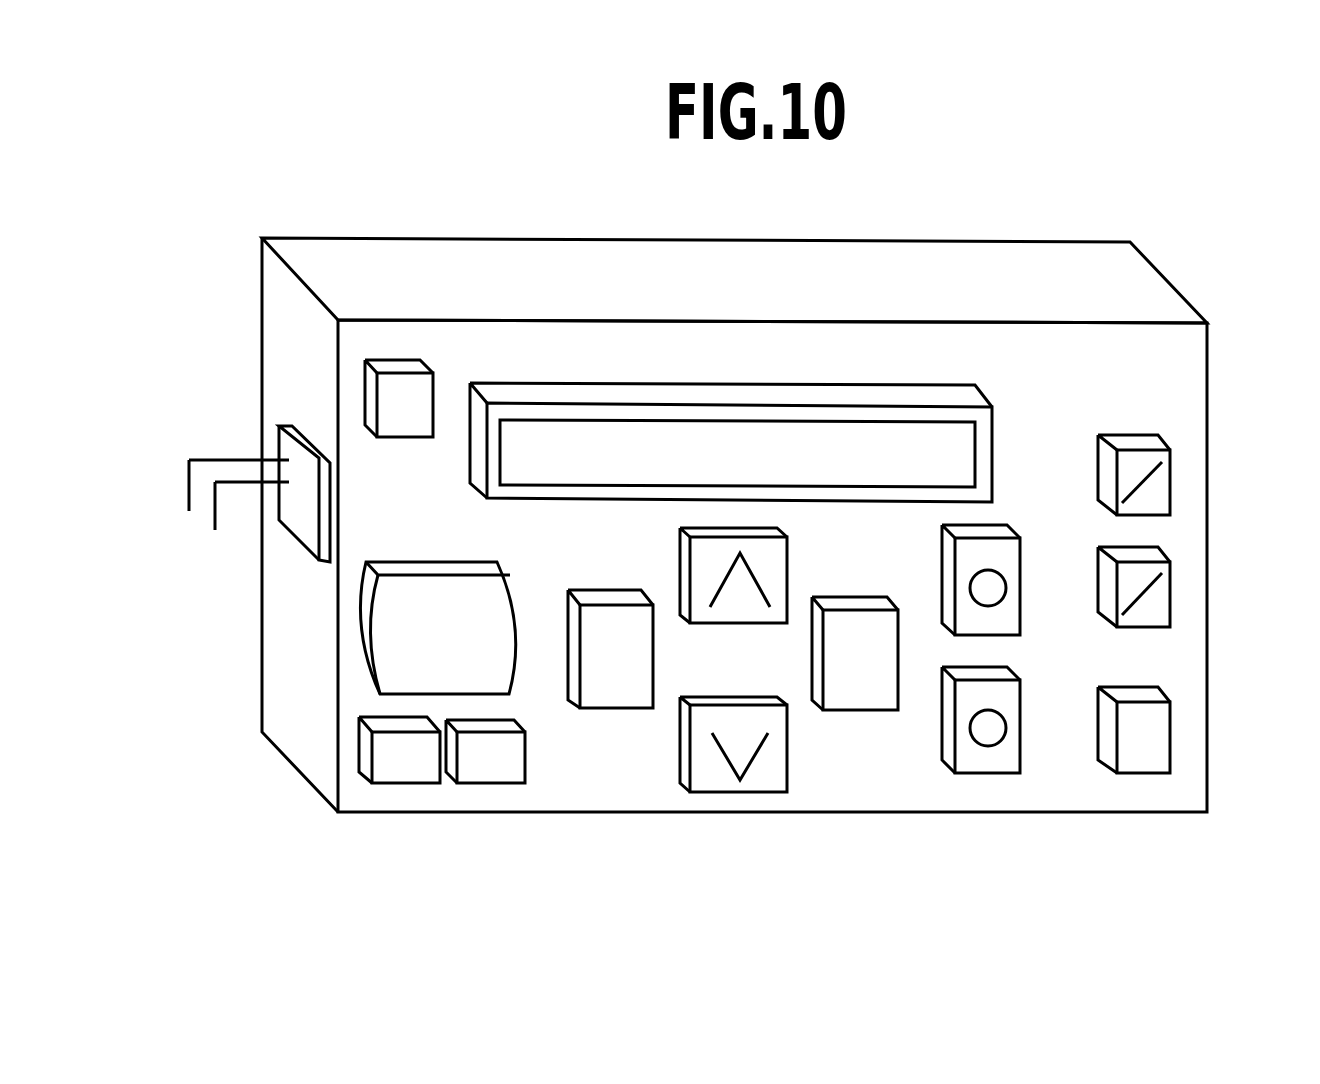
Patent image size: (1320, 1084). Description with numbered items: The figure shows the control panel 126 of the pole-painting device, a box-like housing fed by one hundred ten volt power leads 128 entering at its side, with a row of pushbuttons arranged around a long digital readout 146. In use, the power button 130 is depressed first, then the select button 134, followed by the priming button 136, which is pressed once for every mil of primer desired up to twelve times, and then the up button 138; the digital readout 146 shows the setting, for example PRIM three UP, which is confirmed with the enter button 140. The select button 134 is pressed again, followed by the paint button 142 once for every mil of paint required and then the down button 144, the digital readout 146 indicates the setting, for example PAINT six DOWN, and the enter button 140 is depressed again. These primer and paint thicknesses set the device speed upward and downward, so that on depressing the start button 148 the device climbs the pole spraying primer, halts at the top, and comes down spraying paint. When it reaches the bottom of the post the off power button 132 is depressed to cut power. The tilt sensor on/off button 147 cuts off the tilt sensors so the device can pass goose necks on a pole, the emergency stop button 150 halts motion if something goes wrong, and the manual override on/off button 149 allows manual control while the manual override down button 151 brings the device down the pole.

The control panel 126 is at (953, 262).
The power leads 128 is at (240, 460).
The power button 130 is at (406, 783).
The off power button 132 is at (493, 783).
The select button 134 is at (1015, 558).
The priming button 136 is at (608, 708).
The up button 138 is at (790, 580).
The enter button 140 is at (997, 773).
The paint button 142 is at (870, 710).
The down button 144 is at (745, 792).
The digital readout 146 is at (900, 395).
The tilt sensor on/off button 147 is at (1170, 480).
The start button 148 is at (407, 390).
The manual override on/off button 149 is at (1170, 585).
The emergency stop button 150 is at (359, 651).
The manual override down button 151 is at (1170, 725).